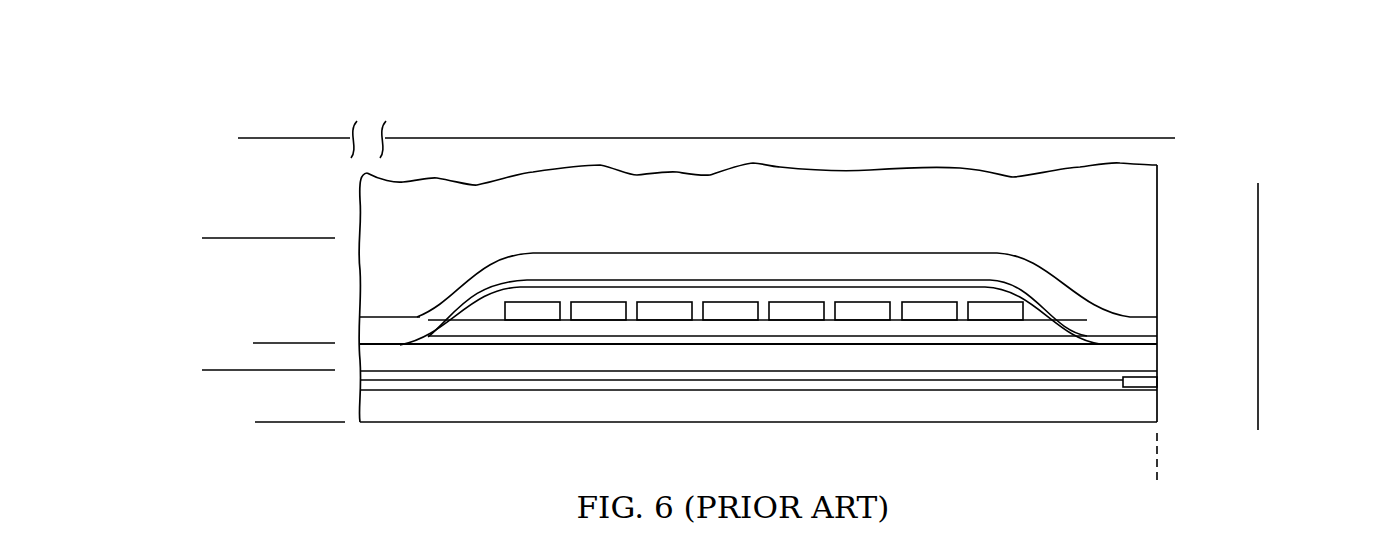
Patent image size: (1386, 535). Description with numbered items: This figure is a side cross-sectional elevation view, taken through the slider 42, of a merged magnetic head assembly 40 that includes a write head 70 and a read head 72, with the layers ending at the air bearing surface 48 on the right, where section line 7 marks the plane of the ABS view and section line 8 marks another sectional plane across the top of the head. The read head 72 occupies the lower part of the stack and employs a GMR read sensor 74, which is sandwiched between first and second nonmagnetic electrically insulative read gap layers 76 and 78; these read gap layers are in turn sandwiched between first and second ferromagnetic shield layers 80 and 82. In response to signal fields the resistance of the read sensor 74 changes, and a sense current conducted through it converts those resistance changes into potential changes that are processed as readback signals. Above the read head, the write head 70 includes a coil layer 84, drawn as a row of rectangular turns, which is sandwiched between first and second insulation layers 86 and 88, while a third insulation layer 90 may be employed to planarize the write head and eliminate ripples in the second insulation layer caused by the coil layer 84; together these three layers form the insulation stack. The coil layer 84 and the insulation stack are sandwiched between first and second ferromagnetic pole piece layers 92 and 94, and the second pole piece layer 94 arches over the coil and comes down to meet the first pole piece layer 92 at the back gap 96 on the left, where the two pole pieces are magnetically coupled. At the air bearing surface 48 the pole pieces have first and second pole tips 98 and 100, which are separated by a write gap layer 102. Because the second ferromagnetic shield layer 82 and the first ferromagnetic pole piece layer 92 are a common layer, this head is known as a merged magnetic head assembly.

The section line 7- 7 is at (1270, 204).
The section line 8- 8 is at (283, 138).
The magnetic head assembly 40 is at (340, 189).
The slider 42 is at (1137, 195).
The air bearing surface 48 is at (1157, 440).
The write head 70 is at (225, 250).
The read head 72 is at (288, 458).
The GMR read sensor 74 is at (1150, 382).
The first read gap layer 76 is at (833, 392).
The second read gap layer 78 is at (774, 366).
The first ferromagnetic shield layer 80 is at (913, 407).
The second ferromagnetic shield layer 82 is at (983, 414).
The first ferromagnetic pole piece layer 92 is at (980, 358).
The coil layer 84 is at (733, 312).
The first insulation layer 86 is at (715, 330).
The second insulation layer 88 is at (1035, 315).
The third insulation layer 90 is at (530, 285).
The second ferromagnetic pole piece layer 94 is at (909, 257).
The back gap 96 is at (396, 344).
The first pole tip 98 is at (1157, 362).
The second pole tip 100 is at (1150, 327).
The write gap layer 102 is at (1150, 340).